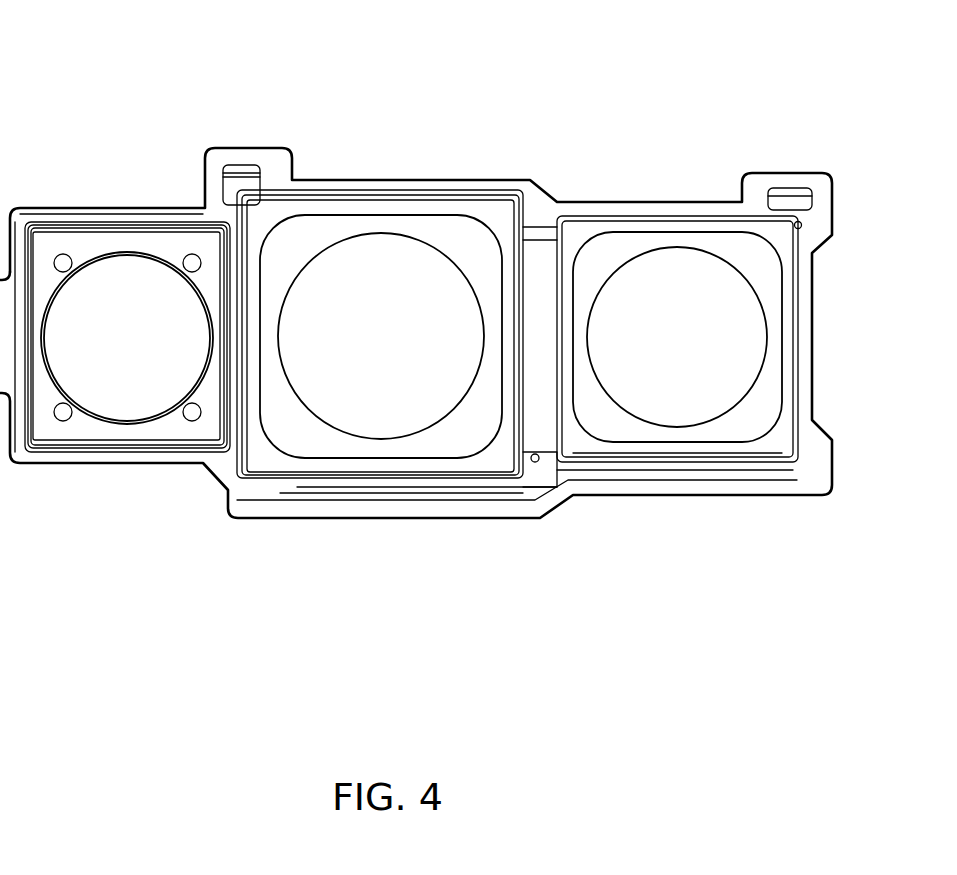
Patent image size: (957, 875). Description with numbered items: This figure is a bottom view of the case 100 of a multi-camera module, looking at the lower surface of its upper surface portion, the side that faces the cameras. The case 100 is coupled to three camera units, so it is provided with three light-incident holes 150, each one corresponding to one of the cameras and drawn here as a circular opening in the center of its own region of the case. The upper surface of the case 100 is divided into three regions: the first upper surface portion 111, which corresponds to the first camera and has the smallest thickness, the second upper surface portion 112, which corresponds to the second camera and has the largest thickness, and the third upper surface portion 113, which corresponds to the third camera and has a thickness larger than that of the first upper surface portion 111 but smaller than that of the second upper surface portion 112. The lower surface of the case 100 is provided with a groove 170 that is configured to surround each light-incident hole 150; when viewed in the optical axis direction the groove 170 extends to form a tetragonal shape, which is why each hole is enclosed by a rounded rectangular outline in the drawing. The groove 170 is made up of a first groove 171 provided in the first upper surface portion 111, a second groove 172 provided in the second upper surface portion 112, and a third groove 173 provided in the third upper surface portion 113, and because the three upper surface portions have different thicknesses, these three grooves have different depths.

The case 100 is at (88, 51).
The first upper surface portion 111 is at (458, 432).
The second upper surface portion 112 is at (723, 247).
The third upper surface portion 113 is at (97, 255).
The light-incident hole 150 is at (136, 364).
The groove 170 is at (607, 86).
The first groove 171 is at (396, 208).
The second groove 172 is at (586, 230).
The third groove 173 is at (177, 246).